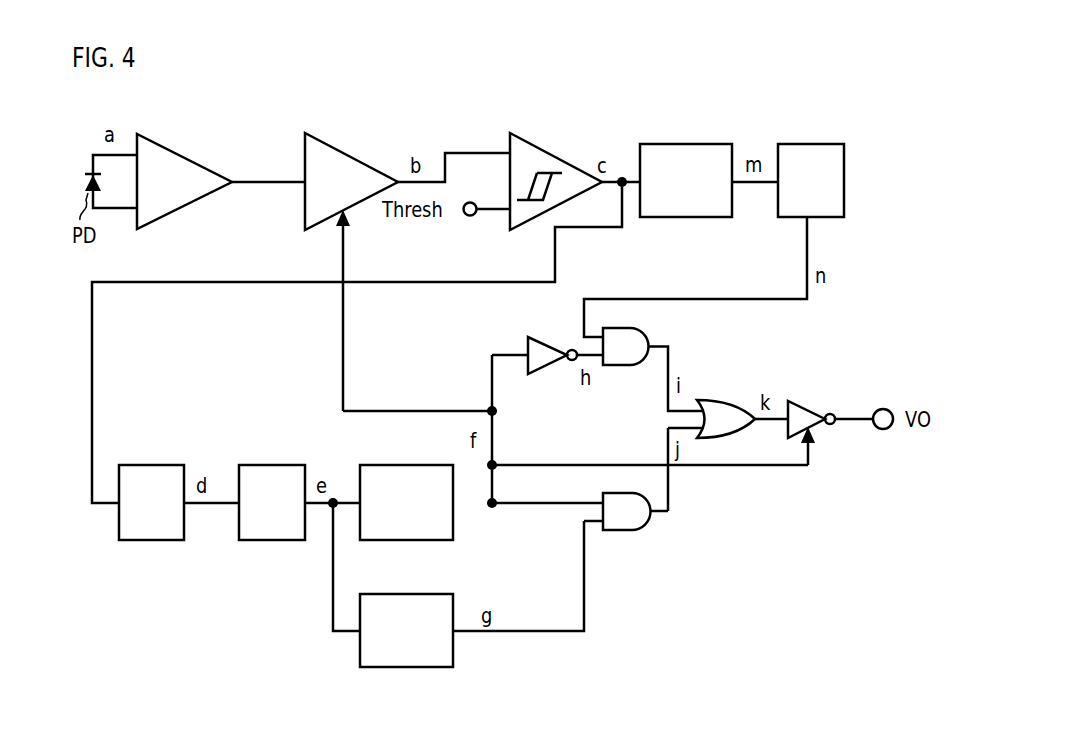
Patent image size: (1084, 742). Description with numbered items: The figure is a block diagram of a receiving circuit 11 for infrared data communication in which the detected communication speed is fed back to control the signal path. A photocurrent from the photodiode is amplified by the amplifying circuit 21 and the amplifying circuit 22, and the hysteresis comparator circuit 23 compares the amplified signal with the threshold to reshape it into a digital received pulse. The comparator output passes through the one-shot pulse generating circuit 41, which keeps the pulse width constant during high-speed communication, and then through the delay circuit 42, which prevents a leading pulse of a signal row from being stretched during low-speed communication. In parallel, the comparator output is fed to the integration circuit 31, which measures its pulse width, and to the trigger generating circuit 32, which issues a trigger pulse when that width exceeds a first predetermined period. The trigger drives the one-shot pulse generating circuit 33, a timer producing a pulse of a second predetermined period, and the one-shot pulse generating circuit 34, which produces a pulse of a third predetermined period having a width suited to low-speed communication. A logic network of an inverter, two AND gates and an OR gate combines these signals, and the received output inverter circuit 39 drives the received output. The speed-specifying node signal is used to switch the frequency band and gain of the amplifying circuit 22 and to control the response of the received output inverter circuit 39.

The receiving circuit 11 is at (892, 145).
The amplifying circuit 21 is at (163, 146).
The amplifying circuit 22 is at (328, 142).
The hysteresis comparator circuit 23 is at (535, 143).
The integration circuit 31 is at (150, 465).
The trigger generating circuit 32 is at (265, 465).
The one-shot pulse generating circuit 33 is at (390, 465).
The one-shot pulse generating circuit 34 is at (390, 594).
The received output inverter circuit 39 is at (805, 402).
The one-shot pulse generating circuit 41 is at (665, 144).
The delay circuit 42 is at (802, 144).